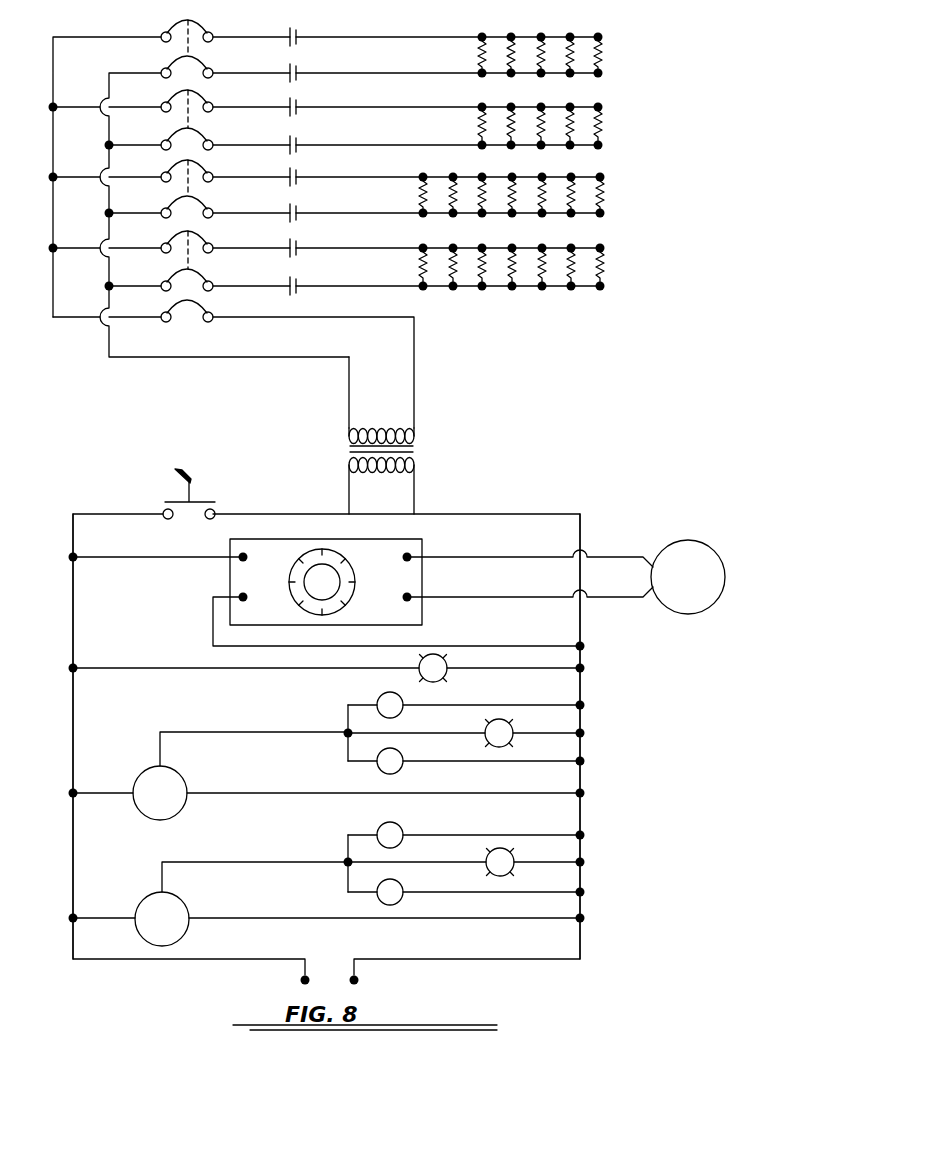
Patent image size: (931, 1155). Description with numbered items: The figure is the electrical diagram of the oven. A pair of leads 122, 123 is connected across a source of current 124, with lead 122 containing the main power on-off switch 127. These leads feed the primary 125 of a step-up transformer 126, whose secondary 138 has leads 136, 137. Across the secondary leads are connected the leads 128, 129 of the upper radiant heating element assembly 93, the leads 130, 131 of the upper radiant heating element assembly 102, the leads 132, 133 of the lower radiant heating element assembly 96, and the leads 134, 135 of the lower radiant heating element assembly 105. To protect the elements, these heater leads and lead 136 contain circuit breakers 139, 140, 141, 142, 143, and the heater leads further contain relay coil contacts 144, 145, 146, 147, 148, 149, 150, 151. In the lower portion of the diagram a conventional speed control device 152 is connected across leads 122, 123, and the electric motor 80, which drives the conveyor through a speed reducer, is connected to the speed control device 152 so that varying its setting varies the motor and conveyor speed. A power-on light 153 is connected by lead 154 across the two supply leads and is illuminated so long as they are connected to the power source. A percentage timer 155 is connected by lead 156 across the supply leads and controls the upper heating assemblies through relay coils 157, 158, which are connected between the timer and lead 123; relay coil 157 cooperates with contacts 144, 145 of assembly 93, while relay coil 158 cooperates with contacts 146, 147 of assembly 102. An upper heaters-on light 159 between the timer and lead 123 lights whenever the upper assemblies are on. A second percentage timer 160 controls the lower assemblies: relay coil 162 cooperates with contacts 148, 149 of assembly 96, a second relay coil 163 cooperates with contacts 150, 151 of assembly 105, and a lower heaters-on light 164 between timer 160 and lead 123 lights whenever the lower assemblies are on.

The electric motor 80 is at (698, 543).
The upper radiant heating element assembly 93 is at (555, 37).
The lower radiant heating element assembly 96 is at (557, 177).
The upper radiant heating element assembly 102 is at (553, 107).
The lower radiant heating element assembly 105 is at (553, 248).
The lead 122 is at (130, 960).
The lead 123 is at (530, 960).
The source of current 124 is at (305, 989).
The primary 125 is at (400, 475).
The step-up transformer 126 is at (414, 450).
The main power on-off switch 127 is at (195, 500).
The lead 128 is at (388, 37).
The lead 129 is at (383, 73).
The lead 130 is at (392, 107).
The lead 131 is at (385, 145).
The lead 132 is at (385, 177).
The lead 133 is at (360, 213).
The lead 134 is at (360, 248).
The lead 135 is at (360, 286).
The lead 136 is at (414, 338).
The lead 137 is at (349, 395).
The secondary 138 is at (380, 429).
The circuit breaker 139 is at (188, 49).
The circuit breaker 140 is at (188, 122).
The circuit breaker 141 is at (188, 190).
The circuit breaker 142 is at (188, 262).
The circuit breaker 143 is at (182, 302).
The relay coil contact 144 is at (297, 35).
The relay coil contact 145 is at (297, 71).
The relay coil contact 146 is at (297, 105).
The relay coil contact 147 is at (297, 143).
The relay coil contact 148 is at (297, 175).
The relay coil contact 149 is at (297, 211).
The relay coil contact 150 is at (297, 246).
The relay coil contact 151 is at (297, 284).
The speed control device 152 is at (377, 546).
The power-on light 153 is at (441, 678).
The lead 154 is at (175, 668).
The percentage timer 155 is at (175, 780).
The lead 156 is at (233, 793).
The relay coil 157 is at (379, 697).
The relay coil 158 is at (400, 769).
The upper heaters-on light 159 is at (513, 730).
The second percentage timer 160 is at (180, 900).
The relay coil 162 is at (400, 827).
The second relay coil 163 is at (400, 899).
The lower heaters-on light 164 is at (514, 859).